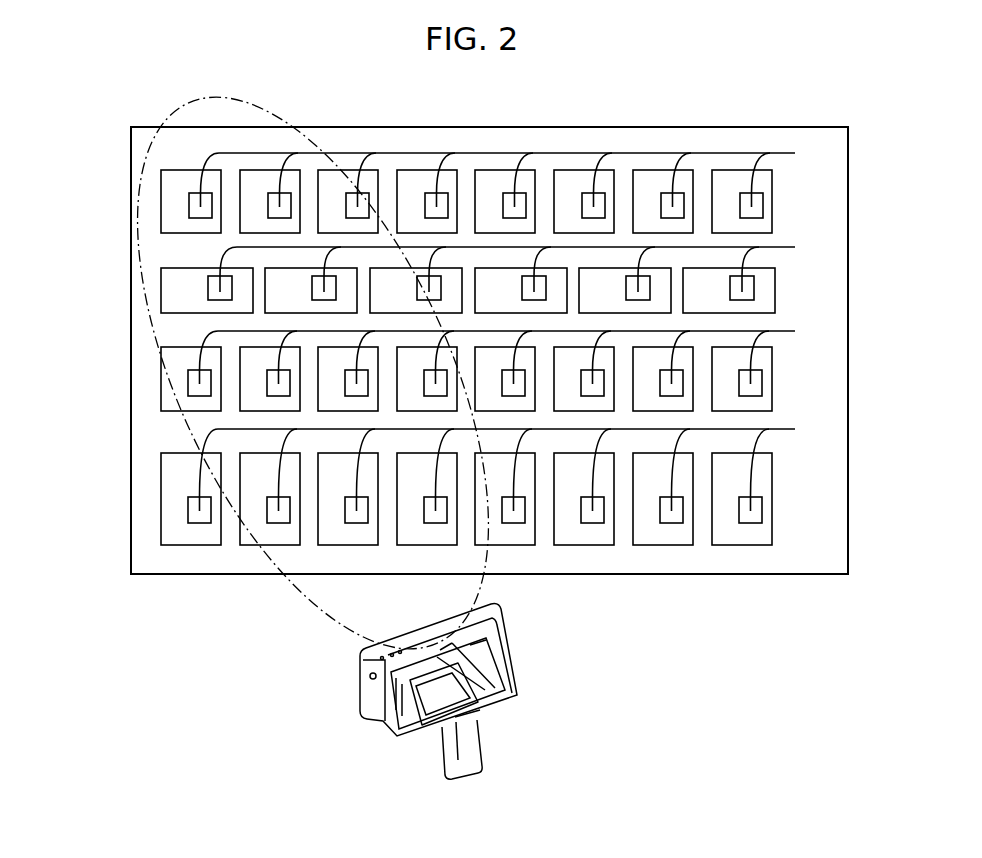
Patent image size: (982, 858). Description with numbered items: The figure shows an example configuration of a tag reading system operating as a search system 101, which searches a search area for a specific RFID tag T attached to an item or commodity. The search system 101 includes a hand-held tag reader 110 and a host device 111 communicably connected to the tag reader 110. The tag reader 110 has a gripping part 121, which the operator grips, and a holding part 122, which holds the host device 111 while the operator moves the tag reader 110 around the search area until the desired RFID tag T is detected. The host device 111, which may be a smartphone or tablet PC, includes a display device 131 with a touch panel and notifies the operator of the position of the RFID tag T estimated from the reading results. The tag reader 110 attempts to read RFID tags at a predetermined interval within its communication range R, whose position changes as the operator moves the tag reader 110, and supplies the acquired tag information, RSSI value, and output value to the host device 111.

The search system 101 is at (347, 708).
The tag reader 110 is at (503, 610).
The host device 111 is at (505, 645).
The gripping part 121 is at (443, 763).
The holding part 122 is at (478, 722).
The display device 131 is at (518, 693).
The communication range R is at (137, 318).
The RFID tag T is at (520, 292).